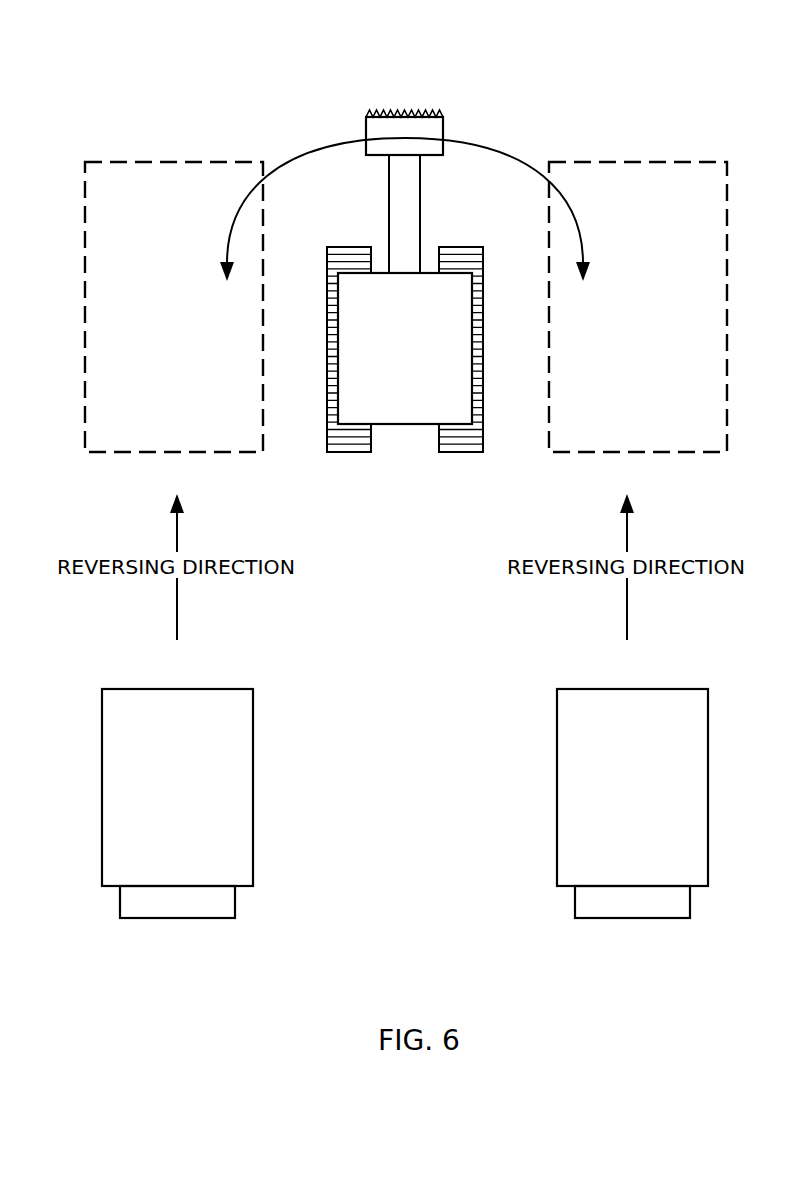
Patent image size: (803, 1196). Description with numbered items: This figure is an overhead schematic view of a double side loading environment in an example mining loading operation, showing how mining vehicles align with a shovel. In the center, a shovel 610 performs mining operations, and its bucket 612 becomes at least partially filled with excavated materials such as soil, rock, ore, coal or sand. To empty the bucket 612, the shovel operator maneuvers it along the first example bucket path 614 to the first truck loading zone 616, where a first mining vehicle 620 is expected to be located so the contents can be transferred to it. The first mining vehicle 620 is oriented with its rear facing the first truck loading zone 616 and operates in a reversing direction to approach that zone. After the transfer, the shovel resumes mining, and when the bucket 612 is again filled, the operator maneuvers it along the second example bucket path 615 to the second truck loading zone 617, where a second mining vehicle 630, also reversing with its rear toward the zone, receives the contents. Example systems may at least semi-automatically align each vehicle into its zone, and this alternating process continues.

The shovel 610 is at (410, 462).
The bucket 612 is at (425, 109).
The first example bucket path 614 is at (280, 163).
The second example bucket path 615 is at (535, 166).
The first truck loading zone 616 is at (107, 150).
The second truck loading zone 617 is at (683, 160).
The first mining vehicle 620 is at (75, 712).
The second mining vehicle 630 is at (530, 712).